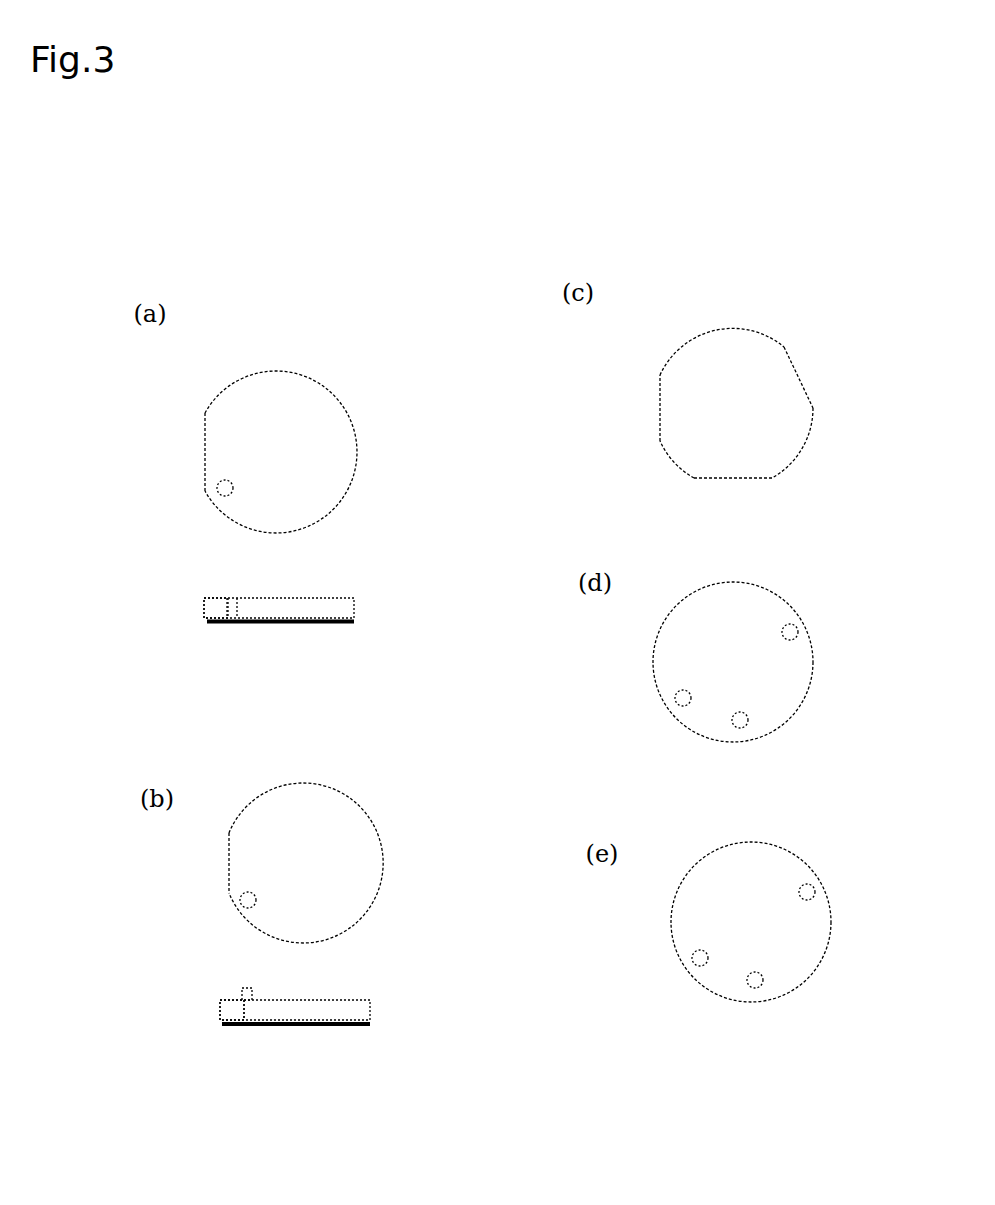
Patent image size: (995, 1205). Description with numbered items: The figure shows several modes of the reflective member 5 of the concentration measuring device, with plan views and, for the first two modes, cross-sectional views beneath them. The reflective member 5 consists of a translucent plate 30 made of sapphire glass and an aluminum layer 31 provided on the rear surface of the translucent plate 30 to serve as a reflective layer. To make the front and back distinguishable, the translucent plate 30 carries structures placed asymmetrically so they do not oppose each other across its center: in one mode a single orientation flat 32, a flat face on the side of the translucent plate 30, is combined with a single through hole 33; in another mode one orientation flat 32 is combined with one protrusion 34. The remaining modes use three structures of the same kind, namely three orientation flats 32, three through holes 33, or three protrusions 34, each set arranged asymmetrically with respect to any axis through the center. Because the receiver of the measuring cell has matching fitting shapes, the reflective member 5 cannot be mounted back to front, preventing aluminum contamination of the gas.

The reflective member 5 is at (548, 649).
The translucent plate 30 is at (320, 789).
The aluminum layer 31 is at (312, 840).
The orientation flat 32 is at (203, 453).
The through hole 33 is at (217, 495).
The protrusion 34 is at (238, 903).